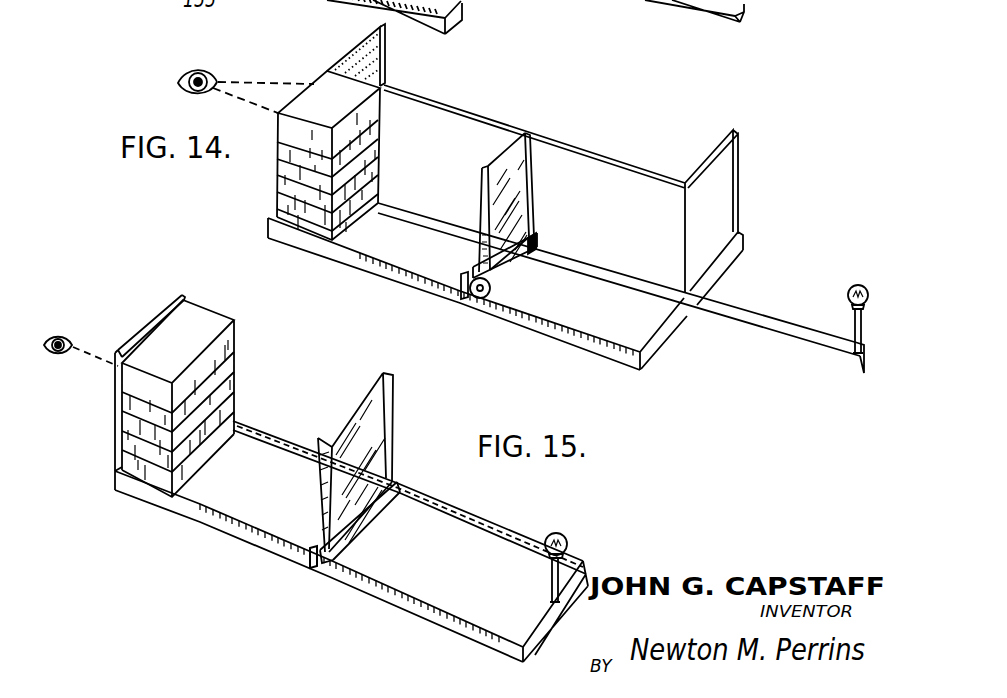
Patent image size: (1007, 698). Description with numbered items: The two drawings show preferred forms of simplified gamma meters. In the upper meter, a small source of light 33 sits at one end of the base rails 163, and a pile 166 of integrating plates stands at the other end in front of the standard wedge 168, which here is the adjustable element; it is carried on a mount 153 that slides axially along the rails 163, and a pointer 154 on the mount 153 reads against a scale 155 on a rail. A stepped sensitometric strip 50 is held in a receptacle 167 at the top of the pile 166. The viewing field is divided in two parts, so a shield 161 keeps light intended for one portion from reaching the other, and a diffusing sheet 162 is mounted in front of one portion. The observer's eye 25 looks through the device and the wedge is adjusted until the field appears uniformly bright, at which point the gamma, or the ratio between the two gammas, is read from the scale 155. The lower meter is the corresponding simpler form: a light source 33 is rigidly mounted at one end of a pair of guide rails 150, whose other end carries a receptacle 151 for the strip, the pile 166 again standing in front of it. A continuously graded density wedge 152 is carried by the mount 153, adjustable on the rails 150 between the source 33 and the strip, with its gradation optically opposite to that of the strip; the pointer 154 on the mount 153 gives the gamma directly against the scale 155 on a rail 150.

In FIG. 14, the eye 25 is at (192, 71).
In FIG. 14, the stepped sensitometric strip 50 is at (350, 54).
In FIG. 15, the stepped sensitometric strip 50 is at (164, 312).
In FIG. 14, the receptacle 167 is at (386, 77).
In FIG. 14, the pile of integrating plates 166 is at (285, 165).
In FIG. 15, the pile of integrating plates 166 is at (227, 362).
In FIG. 14, the shield 161 is at (600, 163).
In FIG. 14, the diffusing sheet 162 is at (714, 163).
In FIG. 14, the rails 163 is at (602, 350).
In FIG. 14, the scale 155 is at (537, 322).
In FIG. 15, the scale 155 is at (247, 532).
In FIG. 14, the standard wedge 168 is at (518, 150).
In FIG. 14, the mount 153 is at (508, 262).
In FIG. 15, the mount 153 is at (362, 532).
In FIG. 14, the pointer 154 is at (463, 298).
In FIG. 15, the pointer 154 is at (310, 567).
In FIG. 14, the source of light 33 is at (855, 286).
In FIG. 15, the source of light 33 is at (563, 535).
In FIG. 15, the receptacle 151 is at (114, 395).
In FIG. 15, the guide rails 150 is at (162, 500).
In FIG. 15, the density wedge 152 is at (382, 423).